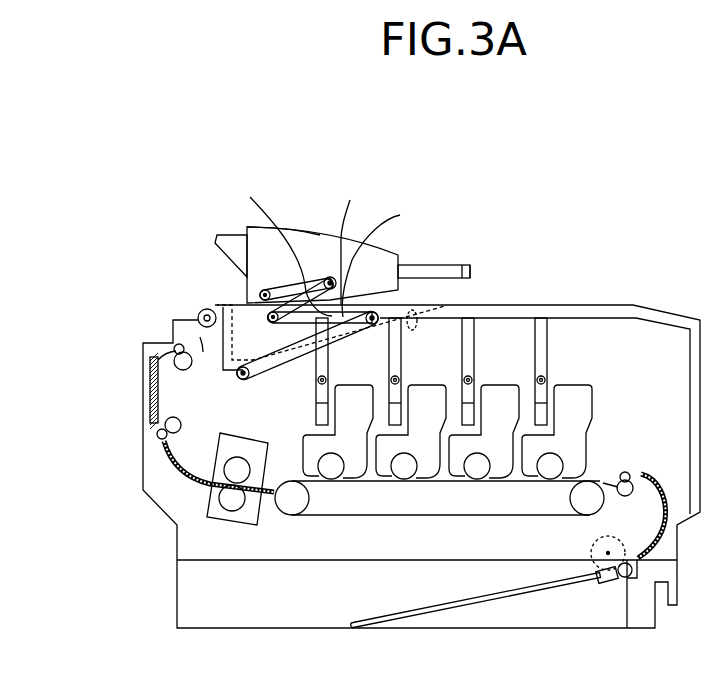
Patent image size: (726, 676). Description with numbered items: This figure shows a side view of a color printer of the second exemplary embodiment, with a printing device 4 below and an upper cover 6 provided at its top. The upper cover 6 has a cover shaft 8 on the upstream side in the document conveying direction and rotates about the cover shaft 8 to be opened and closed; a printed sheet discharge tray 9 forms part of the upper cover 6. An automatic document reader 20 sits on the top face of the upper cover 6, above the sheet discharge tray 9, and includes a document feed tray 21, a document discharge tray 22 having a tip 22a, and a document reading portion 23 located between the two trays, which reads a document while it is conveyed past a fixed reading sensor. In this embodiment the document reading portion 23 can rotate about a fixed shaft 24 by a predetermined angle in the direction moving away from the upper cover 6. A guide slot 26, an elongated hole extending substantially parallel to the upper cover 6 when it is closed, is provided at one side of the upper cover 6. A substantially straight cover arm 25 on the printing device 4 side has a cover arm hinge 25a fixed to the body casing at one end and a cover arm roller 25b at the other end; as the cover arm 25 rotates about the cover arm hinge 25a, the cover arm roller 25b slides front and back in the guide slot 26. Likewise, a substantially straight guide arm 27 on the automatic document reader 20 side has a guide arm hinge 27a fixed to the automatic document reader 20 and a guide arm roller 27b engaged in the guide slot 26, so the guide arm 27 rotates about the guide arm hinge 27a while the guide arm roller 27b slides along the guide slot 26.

The printing device 4 is at (133, 434).
The upper cover 6 is at (545, 304).
The cover shaft 8 is at (198, 313).
The sheet discharge tray 9 is at (416, 331).
The automatic document reader 20 is at (292, 222).
The document feed tray 21 is at (232, 237).
The document discharge tray 22 is at (430, 264).
The tip 22a is at (472, 272).
The document reading portion 23 is at (309, 242).
The fixed shaft 24 is at (265, 289).
The cover arm 25 is at (291, 378).
The cover arm hinge 25a is at (242, 380).
The cover arm roller 25b is at (363, 334).
The guide slot 26 is at (386, 256).
The guide arm 27 is at (281, 244).
The guide arm hinge 27a is at (364, 239).
The guide arm roller 27b is at (260, 311).